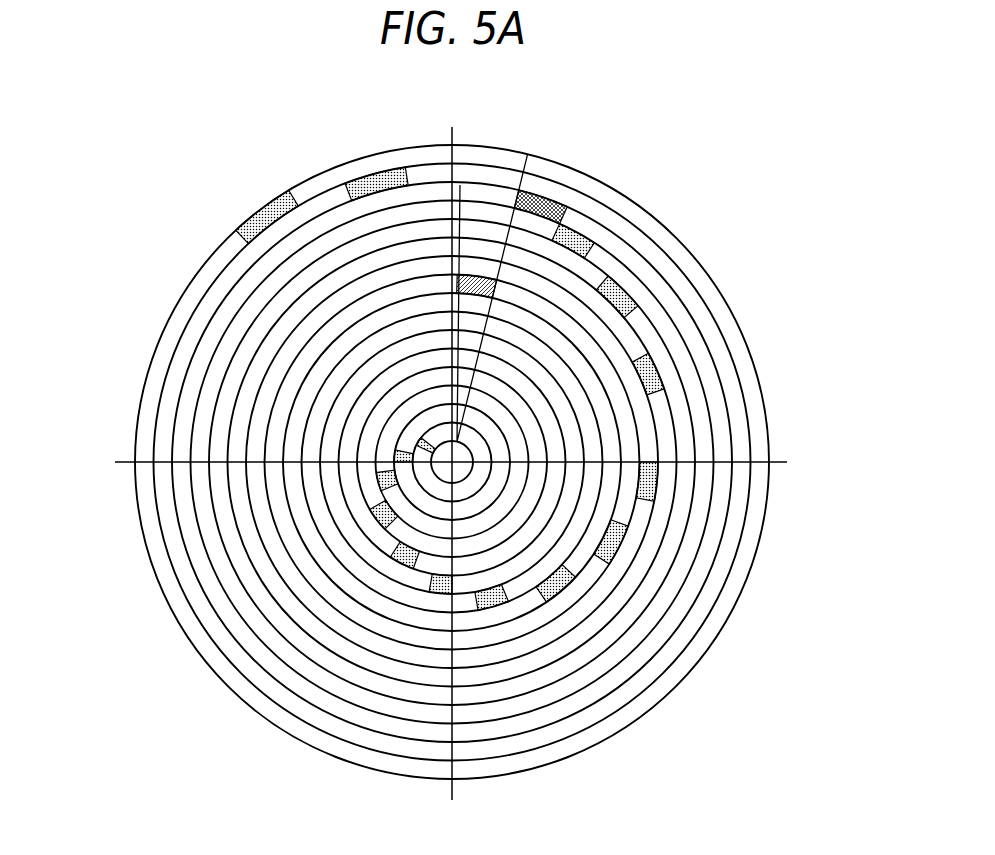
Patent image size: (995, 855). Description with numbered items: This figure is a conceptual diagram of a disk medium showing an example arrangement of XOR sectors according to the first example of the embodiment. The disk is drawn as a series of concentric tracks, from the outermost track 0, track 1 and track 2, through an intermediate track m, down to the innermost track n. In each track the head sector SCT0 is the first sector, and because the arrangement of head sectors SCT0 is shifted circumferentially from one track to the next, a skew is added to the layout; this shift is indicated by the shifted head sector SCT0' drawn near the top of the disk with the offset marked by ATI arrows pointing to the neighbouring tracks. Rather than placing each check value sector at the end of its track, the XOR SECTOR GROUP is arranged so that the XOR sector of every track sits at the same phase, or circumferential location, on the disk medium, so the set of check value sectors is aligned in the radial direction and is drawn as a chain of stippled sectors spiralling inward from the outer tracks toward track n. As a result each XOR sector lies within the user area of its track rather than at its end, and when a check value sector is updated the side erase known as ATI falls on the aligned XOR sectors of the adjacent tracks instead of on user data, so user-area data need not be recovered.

The head sector SCT0 is at (457, 447).
The shifted head sector SCT0' is at (546, 173).
The element track 0 is at (578, 170).
The element track 1 is at (594, 199).
The element track 2 is at (652, 735).
The element track m is at (594, 338).
The element track n is at (434, 421).
The adjacent track interference ATI is at (545, 252).
The XOR sector group XOR SECTOR GROUP is at (527, 84).